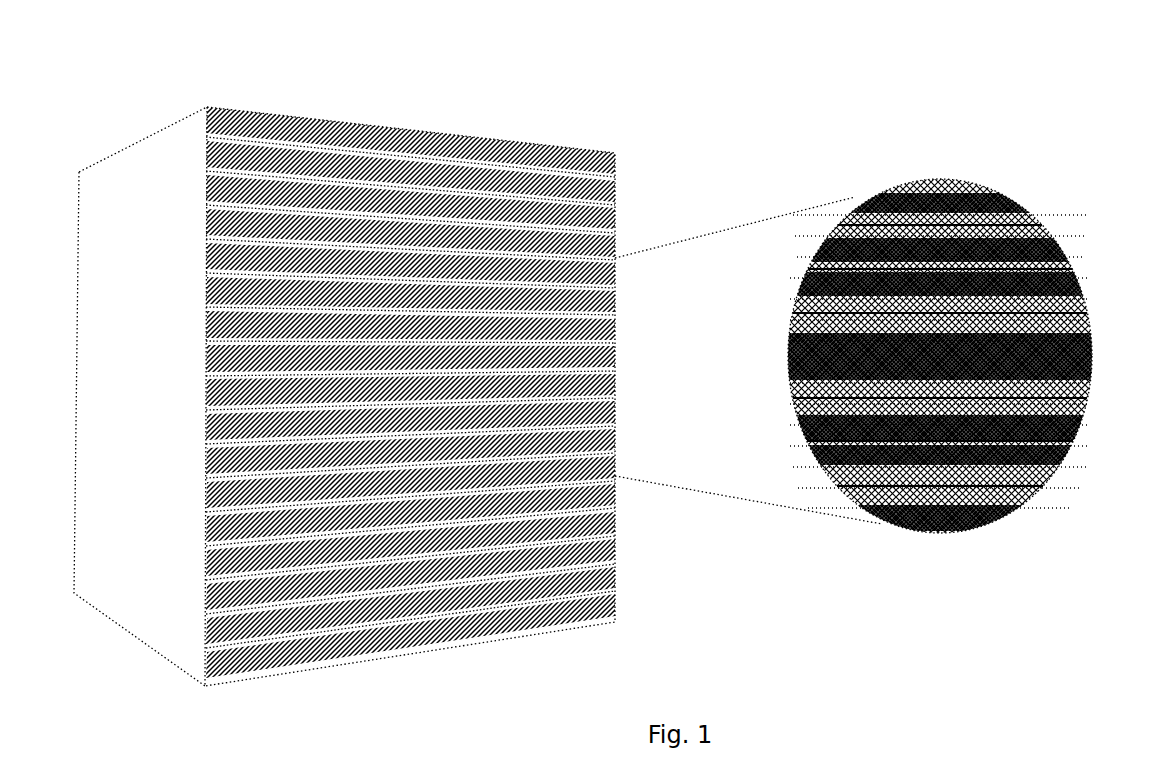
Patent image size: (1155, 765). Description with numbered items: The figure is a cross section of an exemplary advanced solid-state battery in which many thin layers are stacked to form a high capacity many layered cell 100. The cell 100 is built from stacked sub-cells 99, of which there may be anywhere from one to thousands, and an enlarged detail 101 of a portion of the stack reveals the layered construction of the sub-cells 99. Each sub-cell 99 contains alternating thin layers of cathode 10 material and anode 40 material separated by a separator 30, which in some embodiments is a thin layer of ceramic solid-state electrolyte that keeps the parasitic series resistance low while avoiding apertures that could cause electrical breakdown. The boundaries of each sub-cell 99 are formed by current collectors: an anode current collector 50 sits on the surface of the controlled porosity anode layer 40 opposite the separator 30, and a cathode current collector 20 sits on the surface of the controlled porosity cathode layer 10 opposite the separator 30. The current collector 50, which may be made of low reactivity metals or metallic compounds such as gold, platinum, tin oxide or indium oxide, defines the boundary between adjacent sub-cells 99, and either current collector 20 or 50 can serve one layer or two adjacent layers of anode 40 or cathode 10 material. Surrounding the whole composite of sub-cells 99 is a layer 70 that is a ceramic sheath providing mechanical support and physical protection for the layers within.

The many layered cell 100 is at (422, 110).
The ceramic sheath layer 70 is at (280, 110).
The enlarged detail of layer stack 101 is at (853, 323).
The cathode layer 10 is at (822, 249).
The cathode current collector 20 is at (816, 268).
The separator 30 is at (800, 302).
The anode layer 40 is at (791, 313).
The anode current collector 50 is at (788, 318).
The sub-cell 99 is at (1088, 287).